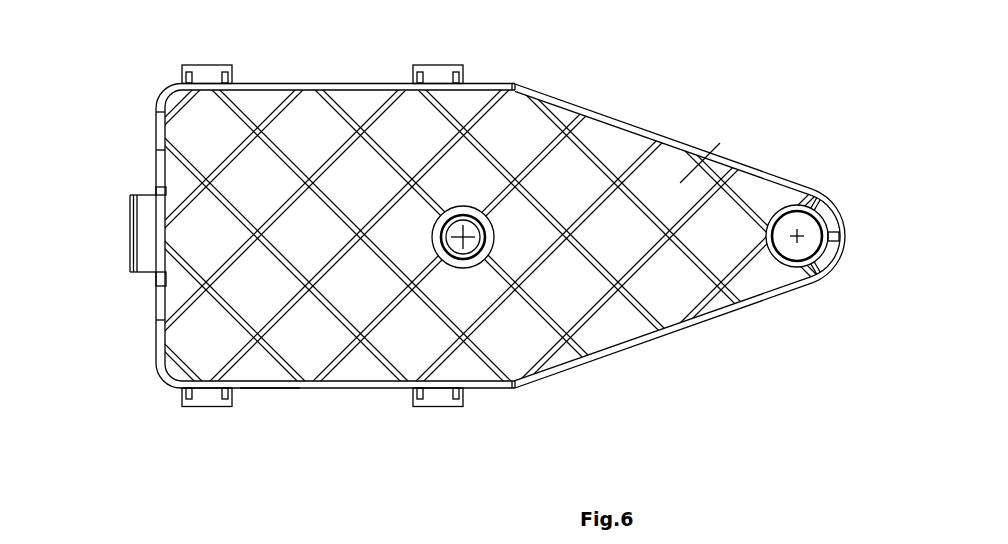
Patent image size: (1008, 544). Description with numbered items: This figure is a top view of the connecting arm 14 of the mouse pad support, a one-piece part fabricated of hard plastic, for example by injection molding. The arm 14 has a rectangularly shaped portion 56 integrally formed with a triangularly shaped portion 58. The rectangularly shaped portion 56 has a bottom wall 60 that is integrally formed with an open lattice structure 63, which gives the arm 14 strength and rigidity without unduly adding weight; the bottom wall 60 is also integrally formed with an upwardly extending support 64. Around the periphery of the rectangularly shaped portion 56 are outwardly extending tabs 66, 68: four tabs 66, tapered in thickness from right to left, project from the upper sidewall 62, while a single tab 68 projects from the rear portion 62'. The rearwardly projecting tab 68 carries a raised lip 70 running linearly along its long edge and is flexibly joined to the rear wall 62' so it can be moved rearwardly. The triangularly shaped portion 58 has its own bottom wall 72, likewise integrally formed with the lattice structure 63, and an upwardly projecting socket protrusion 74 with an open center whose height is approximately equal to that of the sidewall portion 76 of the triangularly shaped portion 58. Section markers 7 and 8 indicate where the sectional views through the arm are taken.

The connecting arm 14 is at (677, 126).
The rectangularly shaped portion 56 is at (271, 401).
The triangularly shaped portion 58 is at (698, 343).
The bottom wall 60 is at (200, 344).
The upper sidewall 62 is at (348, 251).
The rear portion 62' is at (135, 219).
The open lattice structure 63 is at (752, 208).
The upwardly extending support 64 is at (480, 288).
The tabs 66 is at (201, 63).
The tab 68 is at (152, 277).
The raised lip 70 is at (130, 195).
The bottom wall 72 is at (672, 188).
The socket protrusion 74 is at (815, 272).
The sidewall portion 76 is at (600, 362).
The section line 7- 7 is at (355, 40).
The section line 8- 8 is at (75, 233).